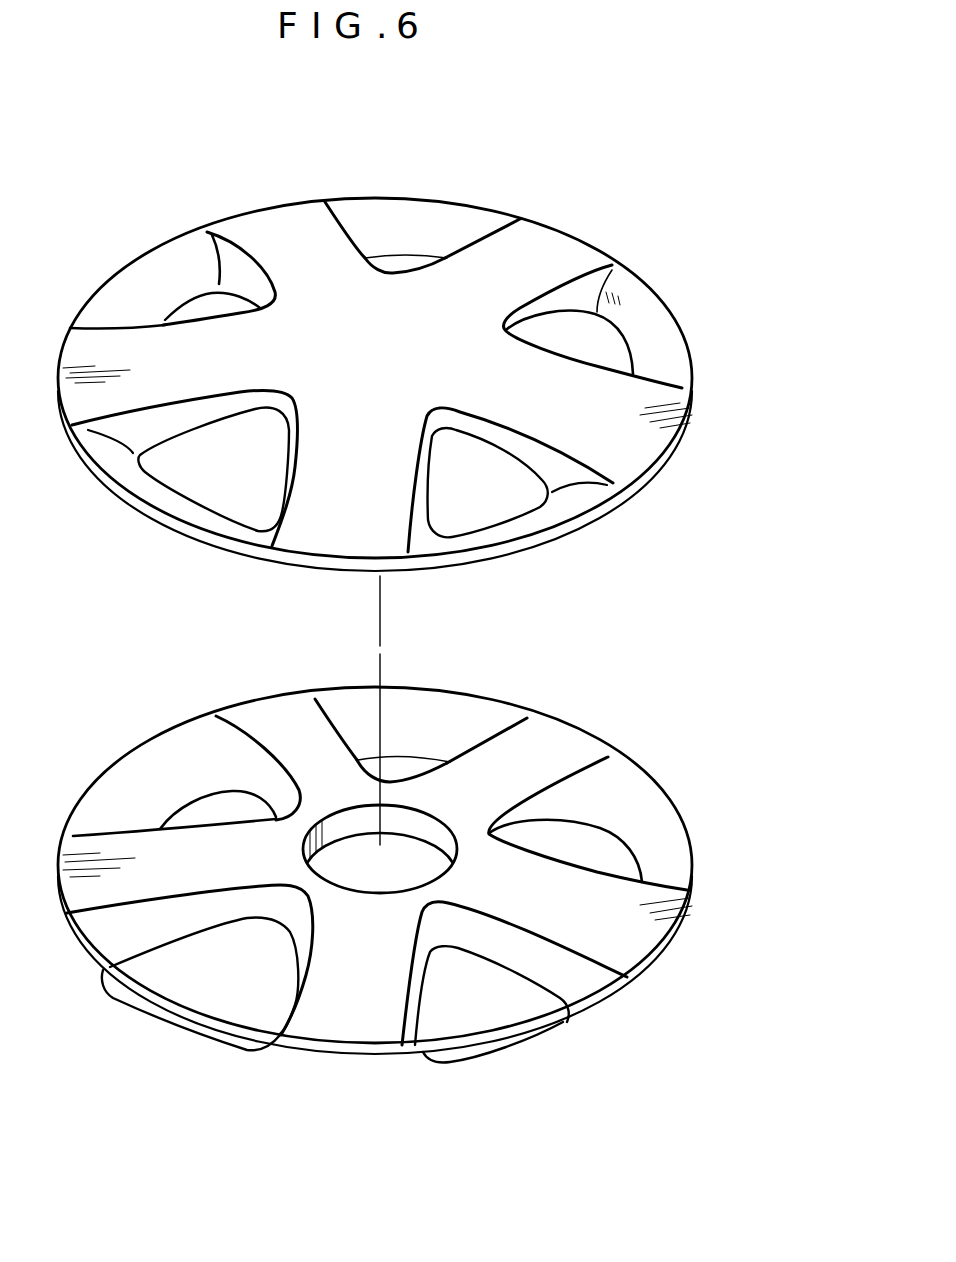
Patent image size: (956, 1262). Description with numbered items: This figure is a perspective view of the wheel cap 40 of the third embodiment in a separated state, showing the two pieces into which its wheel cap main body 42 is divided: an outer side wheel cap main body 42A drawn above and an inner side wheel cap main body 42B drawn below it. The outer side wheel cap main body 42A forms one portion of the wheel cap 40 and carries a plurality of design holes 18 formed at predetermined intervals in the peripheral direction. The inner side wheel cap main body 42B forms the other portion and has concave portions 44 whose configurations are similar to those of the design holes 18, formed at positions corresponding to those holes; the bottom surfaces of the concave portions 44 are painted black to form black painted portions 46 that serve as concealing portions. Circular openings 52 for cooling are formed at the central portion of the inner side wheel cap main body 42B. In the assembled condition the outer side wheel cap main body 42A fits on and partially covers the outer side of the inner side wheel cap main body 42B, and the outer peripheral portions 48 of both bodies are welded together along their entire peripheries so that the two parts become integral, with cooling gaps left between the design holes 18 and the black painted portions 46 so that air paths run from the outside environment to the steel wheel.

The design holes 18 is at (194, 297).
The wheel cap 40 is at (477, 628).
The wheel cap main body 42 is at (775, 547).
The outer side wheel cap main body 42A is at (413, 373).
The inner side wheel cap main body 42B is at (415, 874).
The concave portions 44 is at (408, 718).
The black painted portions 46 is at (417, 766).
The outer peripheral portions 48 is at (673, 450).
The circular openings 52 is at (345, 886).